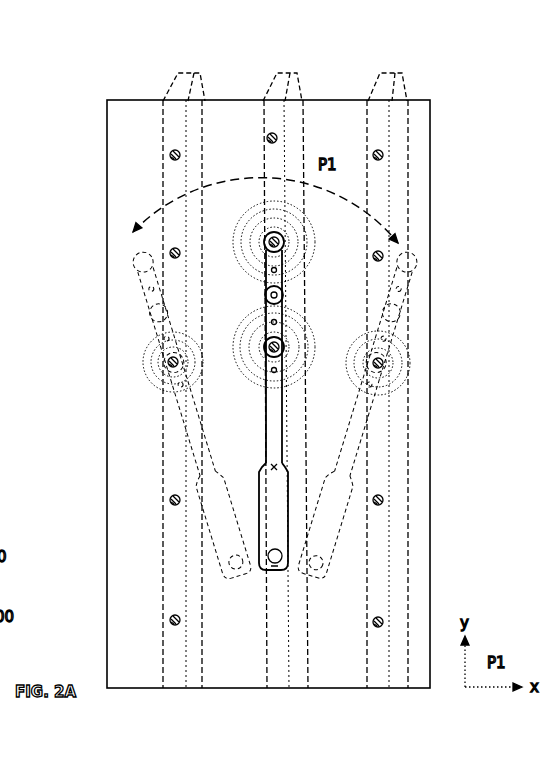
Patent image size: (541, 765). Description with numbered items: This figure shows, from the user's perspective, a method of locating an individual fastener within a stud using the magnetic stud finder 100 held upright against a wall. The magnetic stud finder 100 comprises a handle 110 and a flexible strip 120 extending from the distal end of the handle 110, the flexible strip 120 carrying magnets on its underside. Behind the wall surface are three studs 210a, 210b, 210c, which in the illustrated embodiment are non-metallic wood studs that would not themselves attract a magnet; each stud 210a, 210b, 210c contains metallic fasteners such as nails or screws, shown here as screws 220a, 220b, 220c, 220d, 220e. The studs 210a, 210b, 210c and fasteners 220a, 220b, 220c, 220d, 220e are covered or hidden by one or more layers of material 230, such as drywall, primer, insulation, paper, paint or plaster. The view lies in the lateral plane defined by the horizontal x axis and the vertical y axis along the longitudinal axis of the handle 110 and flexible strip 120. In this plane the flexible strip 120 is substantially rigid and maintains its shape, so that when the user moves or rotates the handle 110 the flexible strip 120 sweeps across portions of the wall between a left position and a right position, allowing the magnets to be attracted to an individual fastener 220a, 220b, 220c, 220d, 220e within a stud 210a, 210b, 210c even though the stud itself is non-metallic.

The magnetic stud finder 100 is at (155, 399).
The handle 110 is at (280, 506).
The flexible strip 120 is at (265, 426).
The stud 210a is at (198, 68).
The stud 210b is at (297, 66).
The stud 210c is at (410, 62).
The fastener 220a is at (385, 160).
The fastener 220b is at (386, 258).
The fastener 220c is at (386, 366).
The fastener 220d is at (386, 502).
The fastener 220e is at (386, 620).
The material layer 230 is at (122, 648).